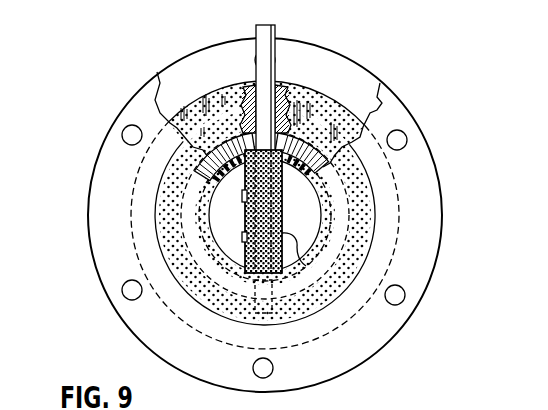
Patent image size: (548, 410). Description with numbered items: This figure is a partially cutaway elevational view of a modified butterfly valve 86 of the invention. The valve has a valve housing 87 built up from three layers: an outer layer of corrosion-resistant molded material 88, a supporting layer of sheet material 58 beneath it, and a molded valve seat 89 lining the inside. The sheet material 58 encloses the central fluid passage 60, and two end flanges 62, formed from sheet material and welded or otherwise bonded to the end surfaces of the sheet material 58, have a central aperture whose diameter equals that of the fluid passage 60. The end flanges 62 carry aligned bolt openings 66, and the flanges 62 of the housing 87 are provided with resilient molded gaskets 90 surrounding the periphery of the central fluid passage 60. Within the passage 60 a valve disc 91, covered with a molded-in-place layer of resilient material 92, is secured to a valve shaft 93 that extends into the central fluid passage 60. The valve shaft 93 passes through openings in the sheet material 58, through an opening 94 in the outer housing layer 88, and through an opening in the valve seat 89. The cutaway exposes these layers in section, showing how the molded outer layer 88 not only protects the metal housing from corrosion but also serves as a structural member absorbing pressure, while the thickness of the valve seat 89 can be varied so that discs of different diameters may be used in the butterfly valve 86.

The sheet material 58 is at (294, 140).
The central fluid passage 60 is at (213, 220).
The end flanges 62 is at (157, 75).
The bolt openings 66 is at (256, 371).
The butterfly valve 86 is at (76, 232).
The valve housing 87 is at (357, 111).
The outer layer of corrosion-resistant molded material 88 is at (199, 112).
The valve seat 89 is at (328, 165).
The resilient molded gaskets 90 is at (225, 306).
The valve disc 91 is at (302, 264).
The layer of resilient material 92 is at (247, 248).
The valve shaft 93 is at (256, 34).
The opening 94 is at (280, 84).